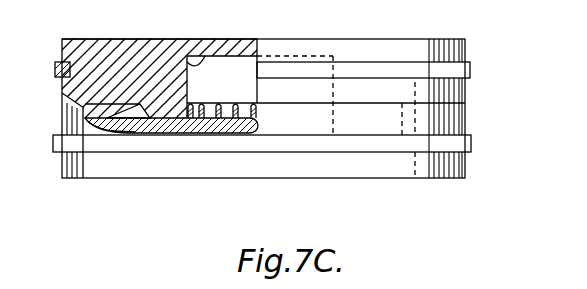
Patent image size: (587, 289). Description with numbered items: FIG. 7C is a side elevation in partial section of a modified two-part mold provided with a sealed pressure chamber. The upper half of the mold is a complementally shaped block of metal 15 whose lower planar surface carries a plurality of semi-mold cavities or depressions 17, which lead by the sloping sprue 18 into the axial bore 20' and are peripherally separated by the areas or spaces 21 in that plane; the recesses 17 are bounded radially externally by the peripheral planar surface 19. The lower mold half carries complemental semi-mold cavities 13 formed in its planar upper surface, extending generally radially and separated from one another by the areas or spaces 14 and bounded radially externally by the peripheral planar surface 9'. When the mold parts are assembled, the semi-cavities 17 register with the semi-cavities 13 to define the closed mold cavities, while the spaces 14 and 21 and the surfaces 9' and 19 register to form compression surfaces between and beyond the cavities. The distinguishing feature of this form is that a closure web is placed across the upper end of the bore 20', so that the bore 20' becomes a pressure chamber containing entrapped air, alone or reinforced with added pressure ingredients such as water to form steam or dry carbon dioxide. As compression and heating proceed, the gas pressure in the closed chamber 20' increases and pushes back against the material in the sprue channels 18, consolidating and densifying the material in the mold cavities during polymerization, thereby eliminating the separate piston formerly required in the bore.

The peripheral planar surface 9' is at (48, 81).
The semi-mold cavities 13 is at (133, 124).
The areas or spaces 14 is at (163, 122).
The block of metal 15 is at (463, 52).
The semi-mold cavities or depressions 17 is at (128, 112).
The sloping sprue 18 is at (218, 102).
The peripheral planar surface 19 is at (465, 99).
The bore 20' is at (194, 37).
The areas or spaces 21 is at (110, 130).